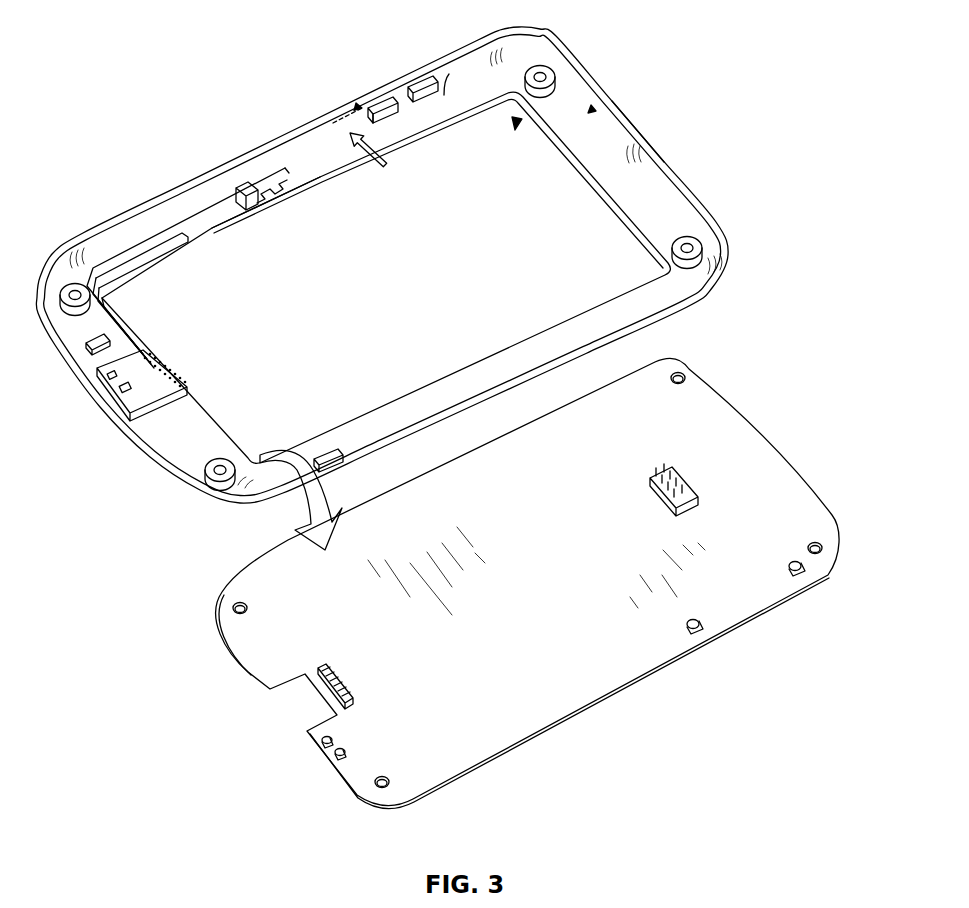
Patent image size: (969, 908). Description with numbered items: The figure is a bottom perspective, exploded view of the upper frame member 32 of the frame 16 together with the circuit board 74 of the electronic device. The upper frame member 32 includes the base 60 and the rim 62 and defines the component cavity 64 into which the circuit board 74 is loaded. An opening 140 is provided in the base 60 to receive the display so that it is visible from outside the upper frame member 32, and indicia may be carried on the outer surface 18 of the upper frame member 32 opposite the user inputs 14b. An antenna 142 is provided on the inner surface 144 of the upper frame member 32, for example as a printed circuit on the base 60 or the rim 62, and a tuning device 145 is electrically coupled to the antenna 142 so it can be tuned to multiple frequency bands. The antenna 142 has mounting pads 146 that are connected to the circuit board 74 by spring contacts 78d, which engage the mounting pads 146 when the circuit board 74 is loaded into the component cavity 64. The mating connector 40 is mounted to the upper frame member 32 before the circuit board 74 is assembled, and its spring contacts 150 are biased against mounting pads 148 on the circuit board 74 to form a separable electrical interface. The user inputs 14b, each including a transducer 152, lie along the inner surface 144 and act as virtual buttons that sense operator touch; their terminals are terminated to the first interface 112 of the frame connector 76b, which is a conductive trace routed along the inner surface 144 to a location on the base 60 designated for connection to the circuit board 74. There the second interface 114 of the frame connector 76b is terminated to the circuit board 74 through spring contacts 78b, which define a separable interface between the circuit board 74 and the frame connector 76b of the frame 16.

The frame 16 is at (278, 137).
The outer surface 18 is at (470, 408).
The upper frame member 32 is at (240, 163).
The mating connector 40 is at (100, 407).
The base 60 is at (598, 168).
The rim 62 is at (633, 133).
The component cavity 64 is at (593, 110).
The circuit board 74 is at (257, 643).
The frame connector 76b is at (372, 164).
The spring contacts 78b is at (700, 621).
The spring contacts 78d is at (313, 741).
The first interface 112 is at (355, 106).
The second interface 114 is at (444, 95).
The opening 140 is at (518, 120).
The antenna 142 is at (197, 210).
The inner surface 144 is at (213, 227).
The tuning device 145 is at (243, 187).
The mounting pads 146 is at (63, 333).
The mounting pads 148 is at (317, 688).
The spring contacts 150 is at (153, 352).
The transducer 152 is at (380, 115).
The user inputs 14b is at (381, 100).